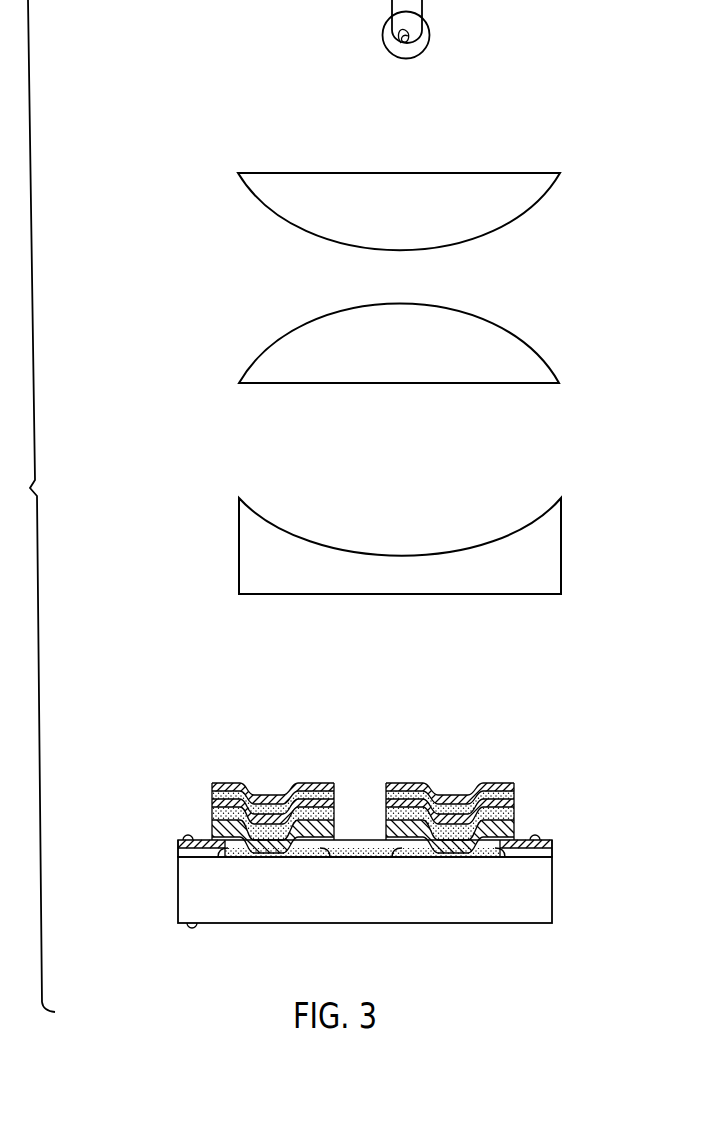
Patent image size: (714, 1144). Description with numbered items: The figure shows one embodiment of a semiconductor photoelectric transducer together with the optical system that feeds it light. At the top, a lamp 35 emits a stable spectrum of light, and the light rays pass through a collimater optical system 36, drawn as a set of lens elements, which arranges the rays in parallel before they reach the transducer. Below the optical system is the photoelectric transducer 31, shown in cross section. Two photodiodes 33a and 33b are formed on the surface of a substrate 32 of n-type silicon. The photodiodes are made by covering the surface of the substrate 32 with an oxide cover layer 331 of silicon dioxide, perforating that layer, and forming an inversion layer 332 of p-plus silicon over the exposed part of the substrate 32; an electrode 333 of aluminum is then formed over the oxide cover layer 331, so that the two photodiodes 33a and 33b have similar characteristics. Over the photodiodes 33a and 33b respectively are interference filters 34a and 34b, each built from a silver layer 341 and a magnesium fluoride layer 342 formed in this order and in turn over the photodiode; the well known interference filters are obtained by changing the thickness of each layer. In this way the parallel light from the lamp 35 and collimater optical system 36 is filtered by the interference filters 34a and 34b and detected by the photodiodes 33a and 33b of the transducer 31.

The lamp 35 is at (430, 34).
The collimater optical system 36 is at (215, 170).
The photoelectric transducer 31 is at (166, 871).
The substrate 32 is at (347, 910).
The photodiode 33a is at (327, 858).
The photodiode 33b is at (407, 858).
The interference filter 34a is at (274, 789).
The interference filter 34b is at (455, 788).
The oxide cover layer 331 is at (178, 852).
The inversion layer 332 is at (308, 862).
The electrode 333 is at (552, 839).
The silver layer 341 is at (534, 836).
The magnesium fluoride layer 342 is at (188, 836).